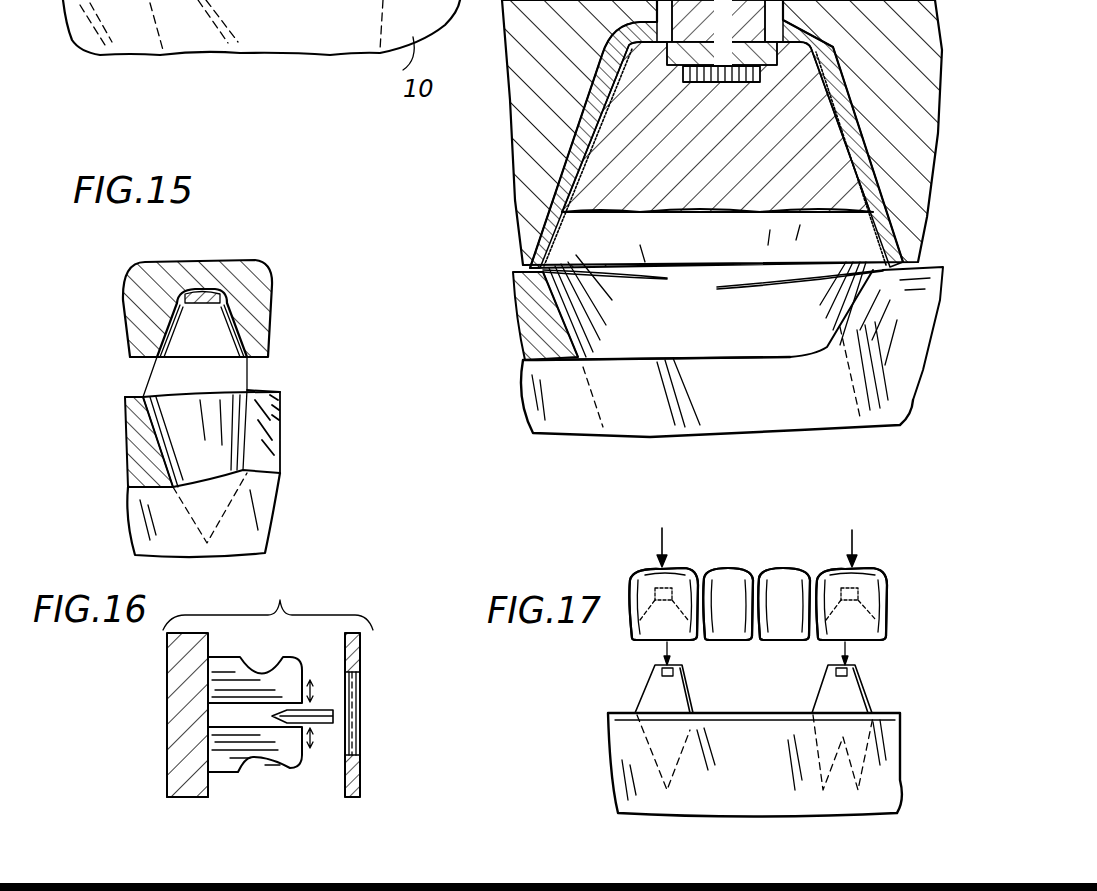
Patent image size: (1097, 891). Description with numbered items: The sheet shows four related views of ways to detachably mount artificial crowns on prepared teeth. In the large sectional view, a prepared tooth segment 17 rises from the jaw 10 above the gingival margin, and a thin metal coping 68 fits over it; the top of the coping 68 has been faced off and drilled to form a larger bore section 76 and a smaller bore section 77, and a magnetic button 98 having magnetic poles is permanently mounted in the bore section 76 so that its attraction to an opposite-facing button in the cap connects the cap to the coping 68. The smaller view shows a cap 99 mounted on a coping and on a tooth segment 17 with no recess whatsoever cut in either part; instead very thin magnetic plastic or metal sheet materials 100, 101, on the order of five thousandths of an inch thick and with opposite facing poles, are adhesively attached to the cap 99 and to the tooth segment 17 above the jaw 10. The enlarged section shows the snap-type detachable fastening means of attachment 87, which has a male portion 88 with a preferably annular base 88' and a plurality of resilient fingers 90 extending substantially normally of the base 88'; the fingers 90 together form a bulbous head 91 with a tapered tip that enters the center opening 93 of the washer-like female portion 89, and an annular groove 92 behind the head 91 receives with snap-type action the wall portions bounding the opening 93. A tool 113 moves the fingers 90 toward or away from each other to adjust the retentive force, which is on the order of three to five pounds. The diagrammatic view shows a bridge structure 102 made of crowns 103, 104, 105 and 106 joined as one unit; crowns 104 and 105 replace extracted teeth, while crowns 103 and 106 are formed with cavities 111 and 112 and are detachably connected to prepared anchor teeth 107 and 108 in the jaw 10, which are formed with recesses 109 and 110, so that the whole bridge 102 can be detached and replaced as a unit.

In FIG. 14, the jawbone 10 is at (543, 390).
In FIG. 15, the jawbone 10 is at (250, 503).
In FIG. 17, the jawbone 10 is at (627, 752).
In FIG. 14, the prepared segment 17 is at (573, 237).
In FIG. 15, the prepared segment 17 is at (232, 357).
In FIG. 14, the coping 68 is at (587, 142).
In FIG. 14, the bore section 76 is at (773, 62).
In FIG. 14, the bore section 77 is at (730, 82).
In FIG. 14, the magnetic button 98 is at (660, 50).
In FIG. 15, the cap 99 is at (260, 305).
In FIG. 15, the magnetic sheet material 100 is at (197, 292).
In FIG. 15, the magnetic sheet material 101 is at (177, 323).
In FIG. 16, the detachable fastening means of attachment 87 is at (268, 595).
In FIG. 16, the male portion 88 is at (157, 715).
In FIG. 16, the base 88' is at (159, 807).
In FIG. 16, the female portion 89 is at (355, 645).
In FIG. 16, the resilient fingers 90 is at (283, 665).
In FIG. 16, the bulbous head 91 is at (287, 765).
In FIG. 16, the annular groove 92 is at (250, 670).
In FIG. 16, the center opening 93 is at (355, 717).
In FIG. 16, the tool 113 is at (322, 722).
In FIG. 17, the bridge structure 102 is at (748, 560).
In FIG. 17, the crown 103 is at (632, 582).
In FIG. 17, the crown 104 is at (713, 568).
In FIG. 17, the crown 105 is at (777, 568).
In FIG. 17, the crown 106 is at (877, 573).
In FIG. 17, the anchor tooth 107 is at (650, 688).
In FIG. 17, the anchor tooth 108 is at (865, 693).
In FIG. 17, the recess 109 is at (677, 670).
In FIG. 17, the recess 110 is at (853, 665).
In FIG. 17, the cavity 111 is at (630, 618).
In FIG. 17, the cavity 112 is at (877, 597).